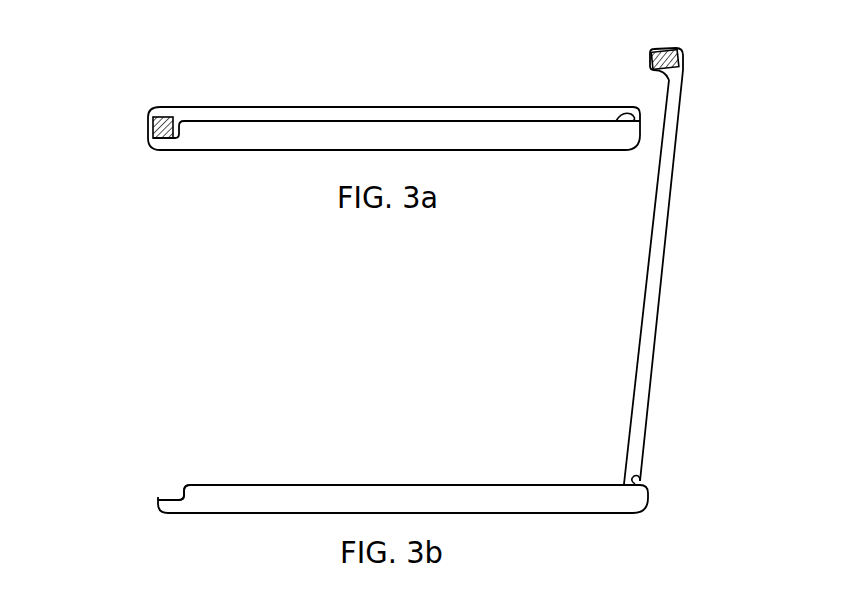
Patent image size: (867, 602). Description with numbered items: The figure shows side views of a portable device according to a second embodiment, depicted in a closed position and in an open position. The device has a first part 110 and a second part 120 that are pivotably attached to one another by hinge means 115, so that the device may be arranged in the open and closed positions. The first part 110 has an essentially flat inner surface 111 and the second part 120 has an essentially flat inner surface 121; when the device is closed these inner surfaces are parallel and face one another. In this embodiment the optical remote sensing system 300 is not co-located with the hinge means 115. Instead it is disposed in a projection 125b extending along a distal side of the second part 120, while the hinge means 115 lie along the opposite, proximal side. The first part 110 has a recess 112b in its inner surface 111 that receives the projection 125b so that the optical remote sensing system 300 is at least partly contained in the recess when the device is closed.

In FIG. 3A, the first part 110 is at (290, 152).
In FIG. 3B, the first part 110 is at (237, 513).
In FIG. 3B, the essentially flat inner surface 111 is at (385, 483).
In FIG. 3A, the recess 112b is at (163, 140).
In FIG. 3B, the recess 112b is at (183, 493).
In FIG. 3A, the hinge means 115 is at (623, 115).
In FIG. 3B, the hinge means 115 is at (637, 478).
In FIG. 3A, the second part 120 is at (223, 107).
In FIG. 3B, the second part 120 is at (655, 358).
In FIG. 3B, the essentially flat inner surface 121 is at (642, 337).
In FIG. 3B, the projection 125b is at (653, 62).
In FIG. 3A, the optical remote sensing system 300 is at (150, 127).
In FIG. 3B, the optical remote sensing system 300 is at (685, 62).